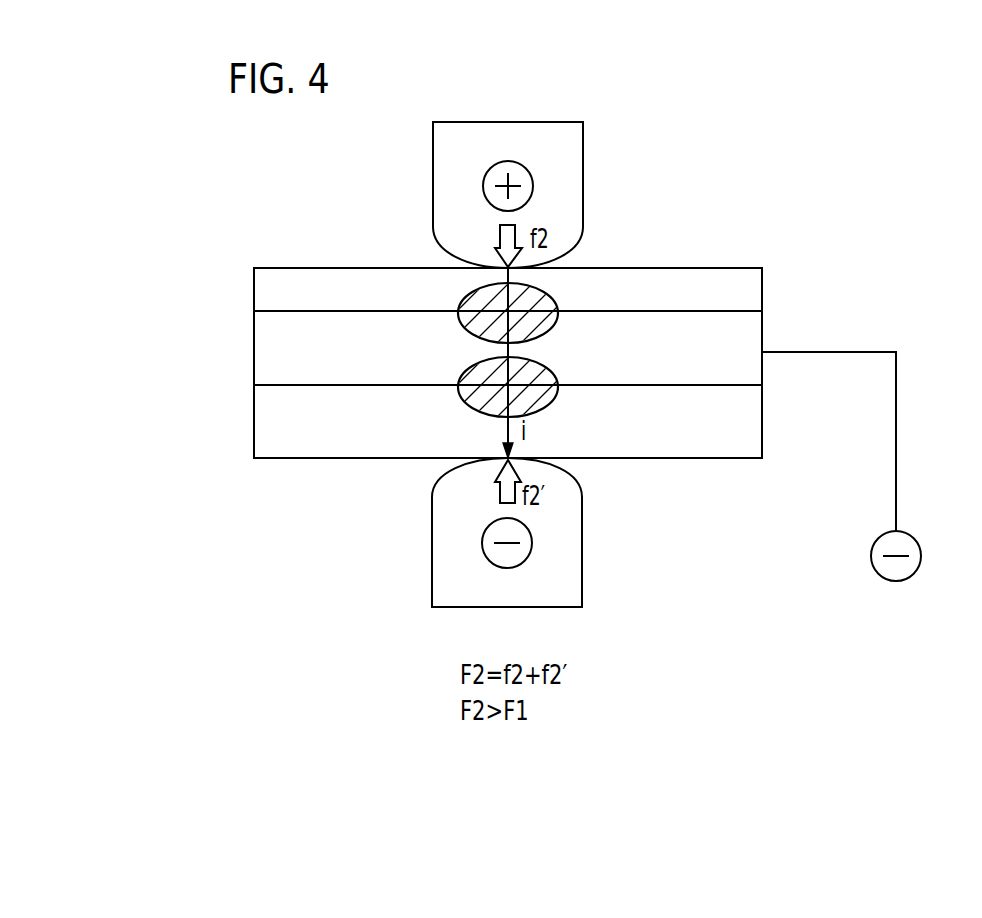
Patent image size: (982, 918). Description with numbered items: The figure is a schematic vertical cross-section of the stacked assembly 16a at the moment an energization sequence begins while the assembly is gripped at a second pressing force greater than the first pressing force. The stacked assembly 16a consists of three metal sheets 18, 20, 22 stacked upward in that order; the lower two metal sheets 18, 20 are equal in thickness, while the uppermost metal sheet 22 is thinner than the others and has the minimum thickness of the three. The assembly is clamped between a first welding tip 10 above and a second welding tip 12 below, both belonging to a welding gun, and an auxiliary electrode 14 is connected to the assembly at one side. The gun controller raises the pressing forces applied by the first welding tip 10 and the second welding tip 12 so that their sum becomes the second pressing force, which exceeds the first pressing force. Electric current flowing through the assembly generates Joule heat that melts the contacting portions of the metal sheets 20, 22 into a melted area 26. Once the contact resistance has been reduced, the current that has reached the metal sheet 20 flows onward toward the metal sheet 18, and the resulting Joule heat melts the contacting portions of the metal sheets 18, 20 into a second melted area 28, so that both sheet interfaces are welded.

The first welding tip 10 is at (568, 197).
The second welding tip 12 is at (567, 540).
The auxiliary electrode 14 is at (917, 552).
The stacked assembly 16a is at (439, 362).
The metal sheet 18 is at (479, 421).
The metal sheet 20 is at (266, 356).
The metal sheet 22 is at (266, 293).
The melted area 26 is at (480, 300).
The melted area 28 is at (483, 365).